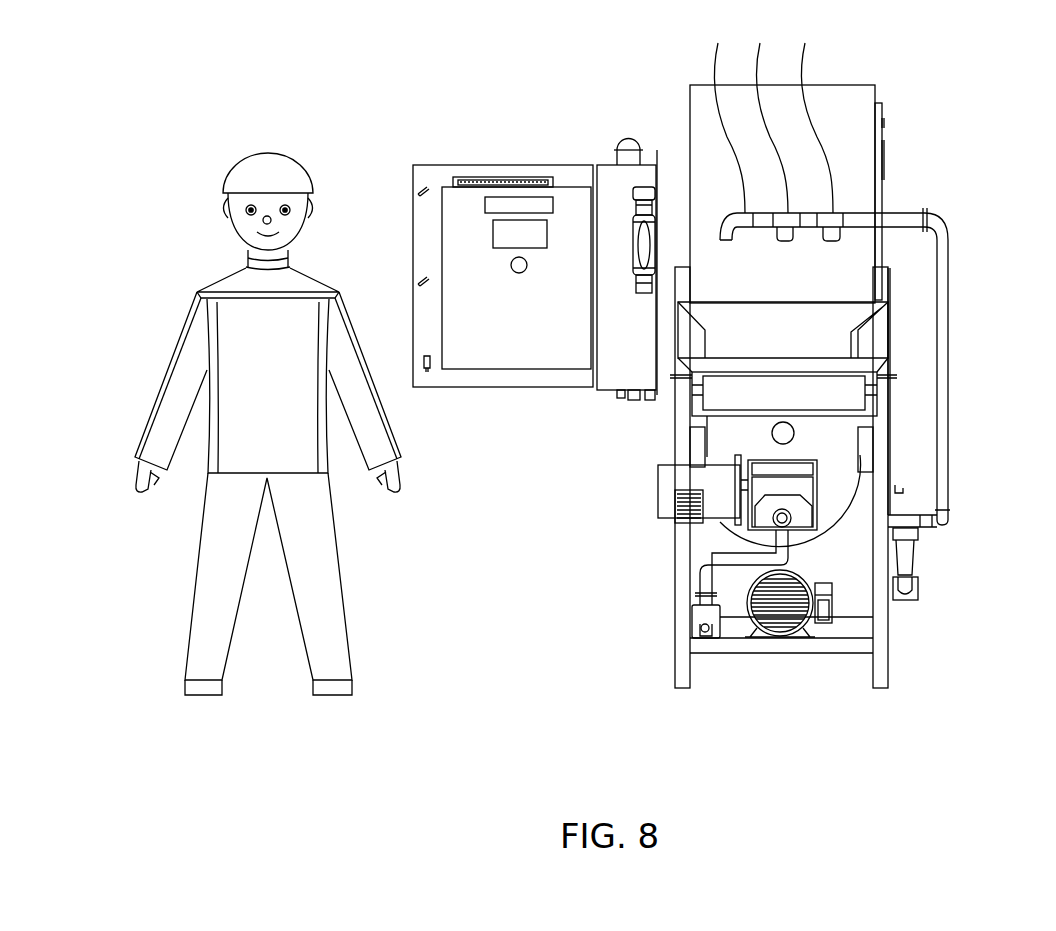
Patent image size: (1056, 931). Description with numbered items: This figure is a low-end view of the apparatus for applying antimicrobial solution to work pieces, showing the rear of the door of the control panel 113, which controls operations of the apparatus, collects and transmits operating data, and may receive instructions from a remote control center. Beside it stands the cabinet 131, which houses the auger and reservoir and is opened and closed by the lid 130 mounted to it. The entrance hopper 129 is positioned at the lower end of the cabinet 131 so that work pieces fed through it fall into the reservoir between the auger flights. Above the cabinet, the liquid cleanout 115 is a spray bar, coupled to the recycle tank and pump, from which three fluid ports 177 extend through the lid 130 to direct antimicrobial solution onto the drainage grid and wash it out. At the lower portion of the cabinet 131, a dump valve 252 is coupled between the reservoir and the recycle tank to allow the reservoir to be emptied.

The control panel 113 is at (500, 190).
The lid 130 is at (707, 105).
The fluid ports 177 is at (766, 117).
The liquid cleanout 115 is at (950, 256).
The entrance hopper 129 is at (878, 328).
The cabinet 131 is at (745, 448).
The dump valve 252 is at (695, 620).